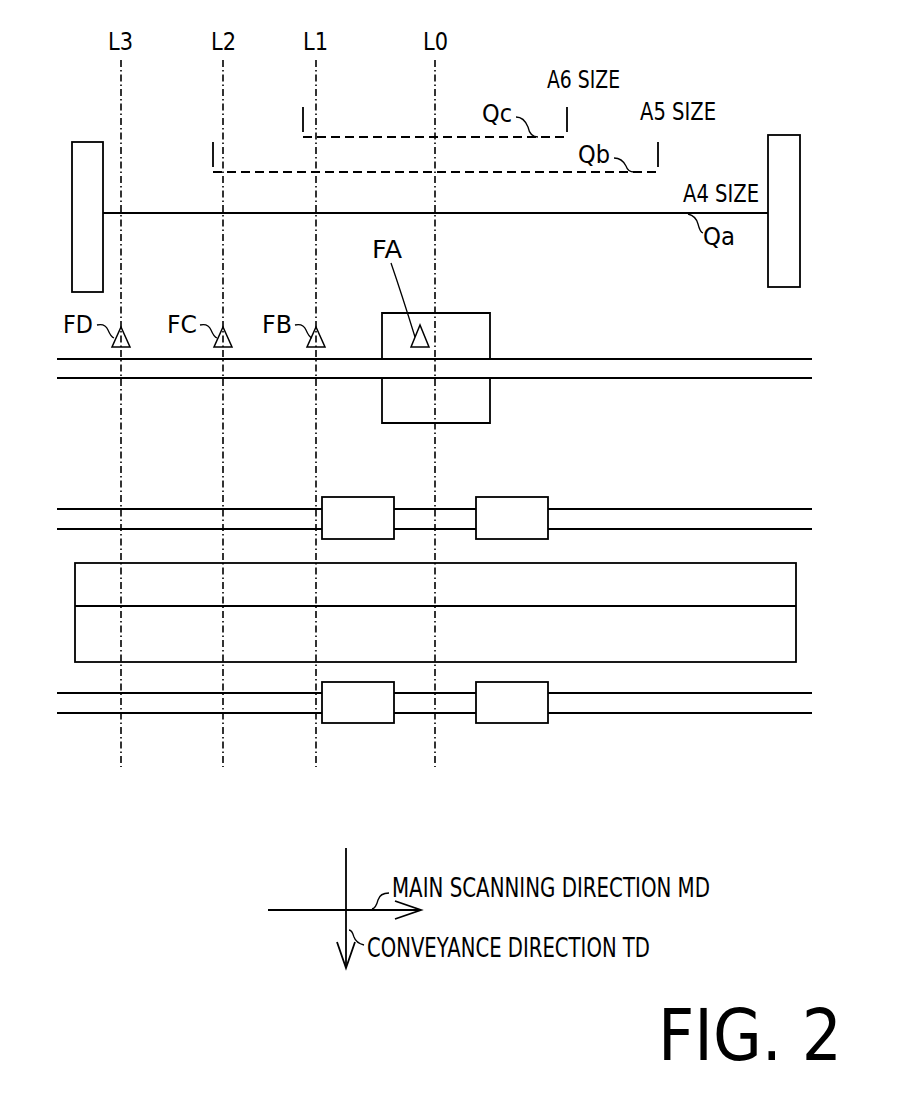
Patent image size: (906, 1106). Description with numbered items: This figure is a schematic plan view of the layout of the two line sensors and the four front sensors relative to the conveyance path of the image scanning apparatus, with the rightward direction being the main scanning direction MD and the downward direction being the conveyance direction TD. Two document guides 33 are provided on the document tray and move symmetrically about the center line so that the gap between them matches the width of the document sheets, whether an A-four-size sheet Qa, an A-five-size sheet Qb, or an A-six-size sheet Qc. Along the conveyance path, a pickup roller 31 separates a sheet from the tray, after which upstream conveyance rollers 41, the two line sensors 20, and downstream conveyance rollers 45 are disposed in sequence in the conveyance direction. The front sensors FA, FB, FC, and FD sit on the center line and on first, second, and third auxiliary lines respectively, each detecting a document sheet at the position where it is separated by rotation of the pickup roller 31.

The line sensor 20 is at (797, 580).
The pickup roller 31 is at (489, 314).
The document guide 33 is at (72, 252).
The upstream conveyance roller 41 is at (549, 498).
The downstream conveyance roller 45 is at (550, 724).